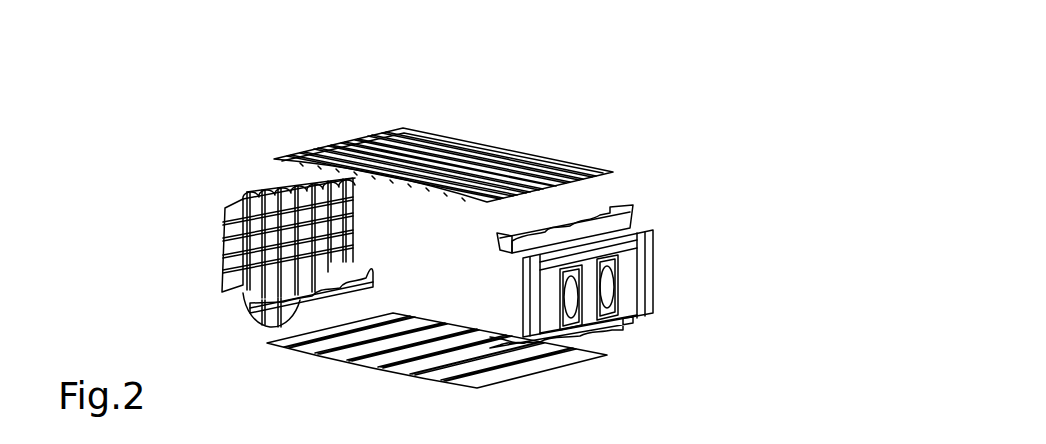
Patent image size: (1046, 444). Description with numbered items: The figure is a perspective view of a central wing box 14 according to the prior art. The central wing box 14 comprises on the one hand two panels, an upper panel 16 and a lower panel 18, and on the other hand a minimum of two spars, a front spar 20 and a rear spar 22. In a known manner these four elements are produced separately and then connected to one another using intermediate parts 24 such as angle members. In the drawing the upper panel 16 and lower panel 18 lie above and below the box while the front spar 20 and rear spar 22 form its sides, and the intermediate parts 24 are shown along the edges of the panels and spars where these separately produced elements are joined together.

The central wing box 14 is at (636, 156).
The upper panel 16 is at (460, 162).
The lower panel 18 is at (373, 370).
The front spar 20 is at (236, 247).
The rear spar 22 is at (625, 284).
The intermediate parts 24 is at (262, 192).